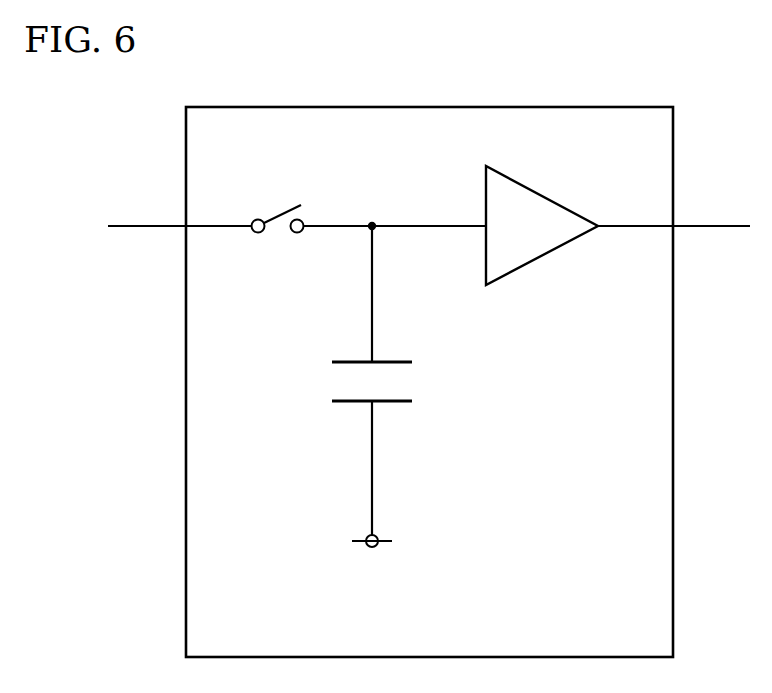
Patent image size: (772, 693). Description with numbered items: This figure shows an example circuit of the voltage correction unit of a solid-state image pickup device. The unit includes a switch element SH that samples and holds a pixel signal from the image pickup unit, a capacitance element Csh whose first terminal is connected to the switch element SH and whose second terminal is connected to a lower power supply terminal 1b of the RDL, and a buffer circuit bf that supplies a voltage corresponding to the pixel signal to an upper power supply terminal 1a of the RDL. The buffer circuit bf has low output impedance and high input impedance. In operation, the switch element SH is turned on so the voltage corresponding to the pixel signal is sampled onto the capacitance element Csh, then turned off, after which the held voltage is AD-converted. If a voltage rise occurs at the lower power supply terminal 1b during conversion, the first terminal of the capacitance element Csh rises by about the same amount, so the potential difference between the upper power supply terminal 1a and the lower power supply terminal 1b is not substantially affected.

The switch element SH is at (278, 208).
The buffer circuit bf is at (556, 198).
The upper power supply terminal 1a is at (674, 209).
The lower power supply terminal 1b is at (373, 548).
The capacitance element Csh is at (400, 380).